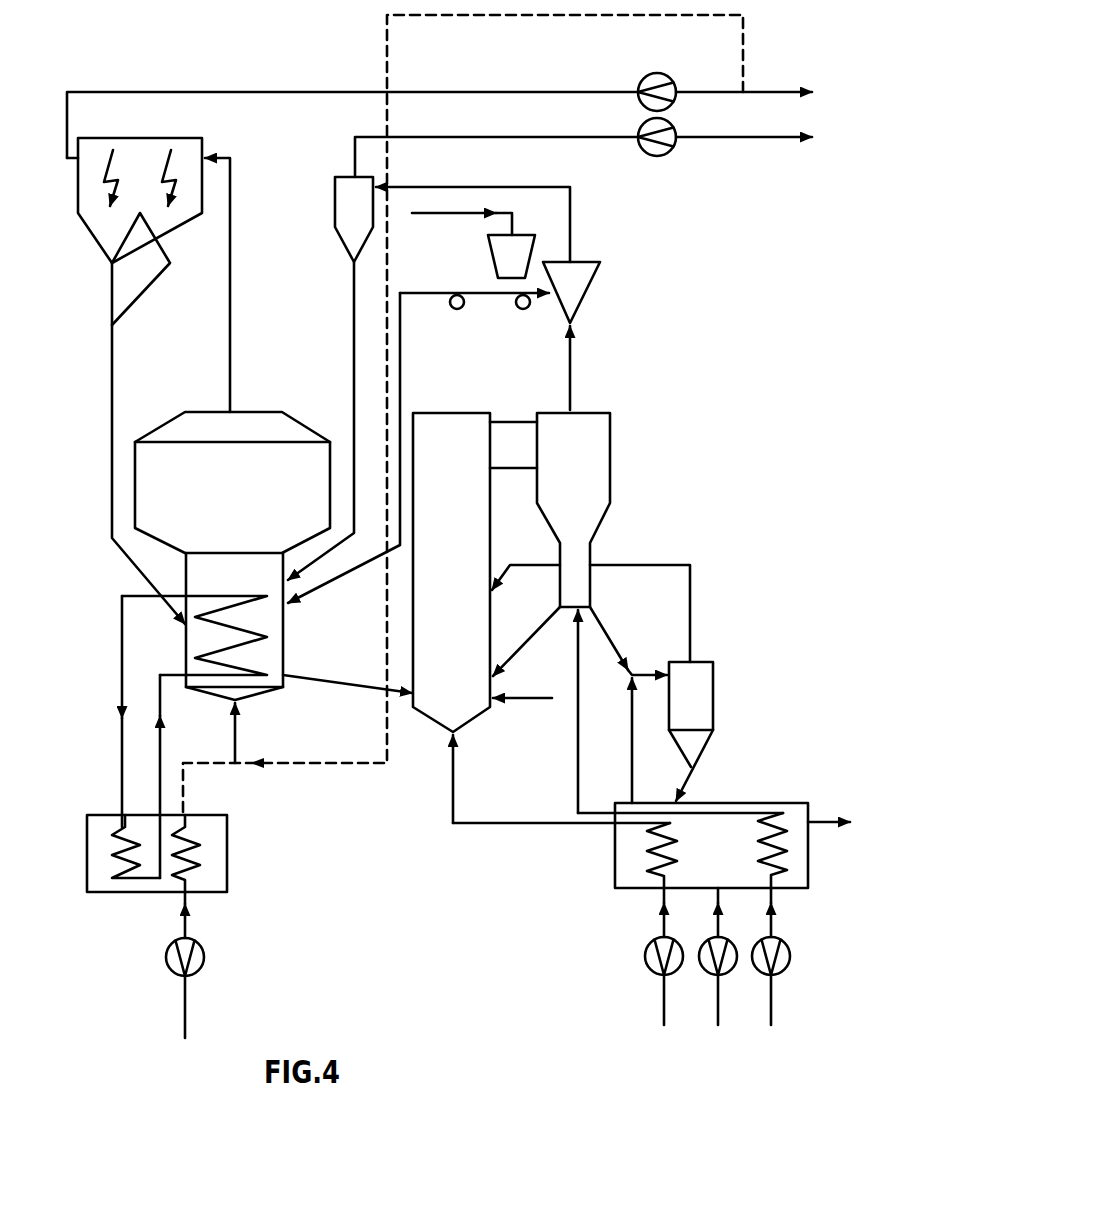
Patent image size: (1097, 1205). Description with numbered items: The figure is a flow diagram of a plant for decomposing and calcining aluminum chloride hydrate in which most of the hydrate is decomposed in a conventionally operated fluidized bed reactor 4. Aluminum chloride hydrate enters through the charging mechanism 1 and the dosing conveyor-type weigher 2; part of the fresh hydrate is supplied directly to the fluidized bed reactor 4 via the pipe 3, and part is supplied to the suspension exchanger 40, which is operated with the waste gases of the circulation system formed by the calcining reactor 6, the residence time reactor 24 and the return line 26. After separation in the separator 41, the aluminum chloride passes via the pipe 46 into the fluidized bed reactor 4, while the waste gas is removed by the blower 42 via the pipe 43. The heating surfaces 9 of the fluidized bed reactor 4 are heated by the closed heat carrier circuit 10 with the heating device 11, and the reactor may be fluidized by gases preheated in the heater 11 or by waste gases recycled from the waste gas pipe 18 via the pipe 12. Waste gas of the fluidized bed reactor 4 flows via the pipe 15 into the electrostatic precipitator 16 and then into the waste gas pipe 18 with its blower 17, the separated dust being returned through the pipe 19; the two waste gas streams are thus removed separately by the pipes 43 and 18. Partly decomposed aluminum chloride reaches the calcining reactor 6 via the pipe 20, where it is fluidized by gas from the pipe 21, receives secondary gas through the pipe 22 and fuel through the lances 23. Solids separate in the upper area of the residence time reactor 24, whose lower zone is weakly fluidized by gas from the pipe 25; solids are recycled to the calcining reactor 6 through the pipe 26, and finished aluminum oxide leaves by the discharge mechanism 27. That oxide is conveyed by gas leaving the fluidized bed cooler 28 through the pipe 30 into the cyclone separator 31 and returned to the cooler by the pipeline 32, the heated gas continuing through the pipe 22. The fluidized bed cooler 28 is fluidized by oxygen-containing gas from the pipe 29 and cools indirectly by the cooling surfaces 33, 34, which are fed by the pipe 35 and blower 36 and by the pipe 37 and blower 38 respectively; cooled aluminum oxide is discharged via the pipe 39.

The charging mechanism 1 is at (488, 257).
The dosing conveyor-type weigher 2 is at (493, 298).
The pipe 3 is at (401, 374).
The fluidized bed reactor 4 is at (268, 411).
The calcining reactor 6 is at (413, 583).
The heating surfaces 9 is at (287, 625).
The heat carrier circuit 10 is at (160, 686).
The heating device 11 is at (110, 893).
The pipe 12 is at (388, 637).
The pipe 15 is at (232, 263).
The electrostatic precipitator 16 is at (97, 238).
The blower 17 is at (641, 77).
The waste gas pipe 18 is at (766, 90).
The pipe 19 is at (112, 385).
The pipe 20 is at (355, 690).
The pipe 21 is at (451, 800).
The pipe 22 is at (642, 564).
The lances 23 is at (528, 699).
The residence time reactor 24 is at (612, 431).
The pipe 25 is at (578, 782).
The pipe 26 is at (536, 633).
The discharge mechanism 27 is at (604, 630).
The fluidized bed cooler 28 is at (615, 874).
The pipe 29 is at (718, 1007).
The pipe 30 is at (632, 726).
The cyclone separator 31 is at (714, 685).
The pipeline 32 is at (690, 787).
The cooling surface 33 is at (650, 838).
The cooling surface 34 is at (742, 850).
The pipe 35 is at (664, 1003).
The blower 36 is at (645, 950).
The pipe 37 is at (773, 995).
The blower 38 is at (786, 942).
The pipe 39 is at (826, 822).
The suspension exchanger 40 is at (610, 283).
The separator 41 is at (335, 200).
The blower 42 is at (658, 157).
The pipe 43 is at (746, 138).
The pipe 46 is at (353, 318).